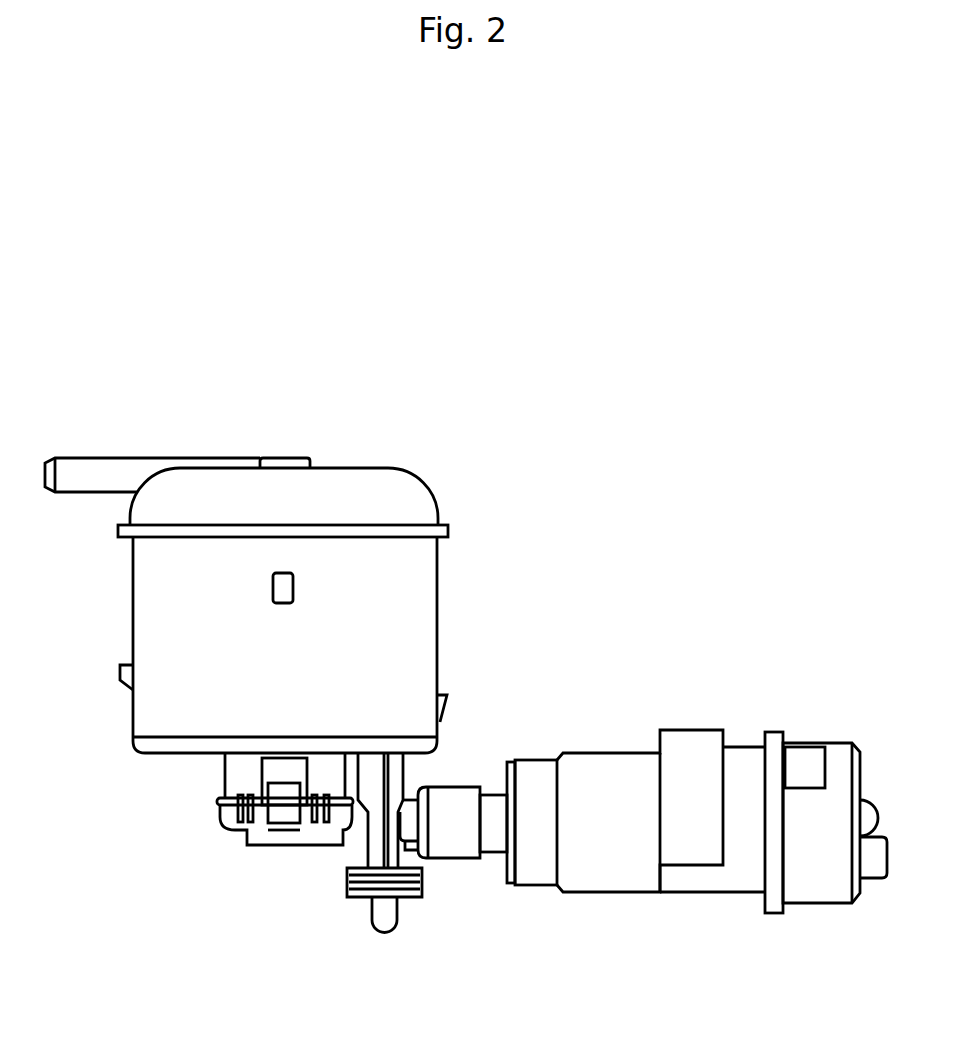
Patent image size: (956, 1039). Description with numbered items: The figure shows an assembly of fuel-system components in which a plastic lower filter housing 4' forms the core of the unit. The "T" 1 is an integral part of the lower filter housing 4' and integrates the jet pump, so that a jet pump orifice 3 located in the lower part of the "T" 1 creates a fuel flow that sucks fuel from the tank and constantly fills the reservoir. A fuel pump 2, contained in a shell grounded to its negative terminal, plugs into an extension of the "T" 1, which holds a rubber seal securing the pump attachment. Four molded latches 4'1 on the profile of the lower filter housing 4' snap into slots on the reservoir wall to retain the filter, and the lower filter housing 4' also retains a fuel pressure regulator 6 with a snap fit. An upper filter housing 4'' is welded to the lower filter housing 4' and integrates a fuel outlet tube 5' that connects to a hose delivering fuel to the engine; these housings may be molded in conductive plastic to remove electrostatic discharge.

The "T" 1 is at (438, 847).
The fuel pump 2 is at (600, 754).
The jet pump orifice 3 is at (395, 927).
The lower filter housing 4' is at (327, 639).
The upper filter housing 4'' is at (293, 466).
The molded latches 4'1 is at (75, 691).
The fuel outlet tube 5' is at (152, 436).
The fuel pressure regulator 6 is at (285, 797).